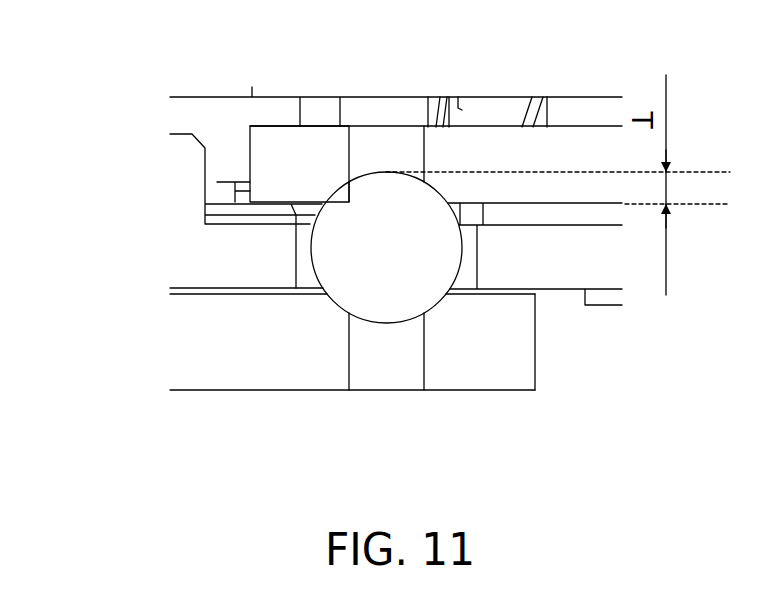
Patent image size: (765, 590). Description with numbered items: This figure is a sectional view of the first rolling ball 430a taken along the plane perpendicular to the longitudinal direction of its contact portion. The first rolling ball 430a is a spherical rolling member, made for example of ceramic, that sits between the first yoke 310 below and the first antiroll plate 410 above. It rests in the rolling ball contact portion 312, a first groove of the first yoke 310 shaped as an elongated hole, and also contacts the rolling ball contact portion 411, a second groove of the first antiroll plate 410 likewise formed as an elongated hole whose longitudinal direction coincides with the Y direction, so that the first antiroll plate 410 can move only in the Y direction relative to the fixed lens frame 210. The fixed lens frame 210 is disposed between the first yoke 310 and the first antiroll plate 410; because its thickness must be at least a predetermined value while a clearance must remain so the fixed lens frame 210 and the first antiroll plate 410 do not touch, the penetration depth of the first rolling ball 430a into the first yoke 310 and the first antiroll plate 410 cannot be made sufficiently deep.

The first antiroll plate 410 is at (285, 160).
The rolling ball contact portion (second groove) 411 is at (437, 188).
The first rolling ball (rolling member) 430a is at (372, 257).
The fixed lens frame 210 is at (523, 268).
The first yoke 310 is at (452, 360).
The rolling ball contact portion (first groove) 312 is at (333, 307).